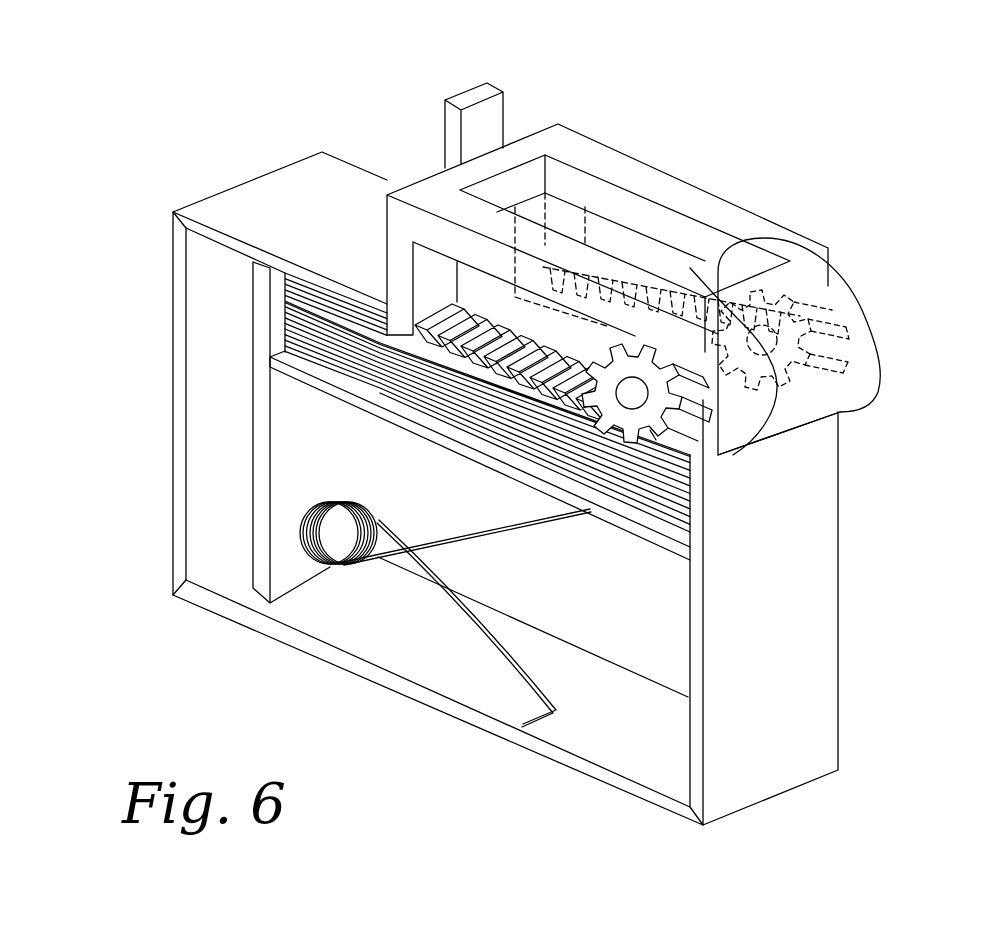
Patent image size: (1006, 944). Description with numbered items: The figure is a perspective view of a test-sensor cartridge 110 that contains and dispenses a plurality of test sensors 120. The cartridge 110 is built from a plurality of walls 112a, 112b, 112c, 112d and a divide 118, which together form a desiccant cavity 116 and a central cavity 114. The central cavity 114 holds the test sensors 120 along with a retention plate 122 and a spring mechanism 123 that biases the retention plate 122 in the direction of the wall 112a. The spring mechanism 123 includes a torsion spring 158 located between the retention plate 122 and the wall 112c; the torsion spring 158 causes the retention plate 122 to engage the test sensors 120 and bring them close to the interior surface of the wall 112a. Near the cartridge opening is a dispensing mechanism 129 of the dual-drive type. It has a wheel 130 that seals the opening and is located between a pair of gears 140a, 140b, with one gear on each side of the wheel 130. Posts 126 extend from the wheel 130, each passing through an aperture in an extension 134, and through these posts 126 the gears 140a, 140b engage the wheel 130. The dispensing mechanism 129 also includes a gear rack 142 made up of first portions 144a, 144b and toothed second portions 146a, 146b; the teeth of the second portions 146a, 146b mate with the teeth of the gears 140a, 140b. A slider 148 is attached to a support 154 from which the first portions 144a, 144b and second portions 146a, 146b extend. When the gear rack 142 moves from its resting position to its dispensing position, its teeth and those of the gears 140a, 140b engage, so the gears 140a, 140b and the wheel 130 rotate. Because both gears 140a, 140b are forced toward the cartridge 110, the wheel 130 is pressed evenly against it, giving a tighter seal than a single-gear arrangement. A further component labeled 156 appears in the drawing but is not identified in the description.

The test-sensor cartridge 110 is at (128, 133).
The wall 112a is at (338, 158).
The wall 112b is at (830, 636).
The wall 112c is at (174, 600).
The wall 112d is at (172, 307).
The central cavity 114 is at (424, 662).
The desiccant cavity 116 is at (200, 423).
The divide 118 is at (257, 592).
The test sensors 120 is at (293, 295).
The retention plate 122 is at (688, 453).
The spring mechanism 123 is at (382, 608).
The posts 126 is at (633, 400).
The dispensing mechanism 129 is at (888, 224).
The wheel 130 is at (867, 337).
The extension 134 is at (845, 410).
The gear 140a is at (667, 443).
The gear 140b is at (833, 315).
The gear rack 142 is at (524, 108).
The first portion 144a is at (625, 165).
The first portion 144b is at (467, 213).
The second portion 146a is at (610, 277).
The second portion 146b is at (415, 333).
The slider 148 is at (463, 100).
The support 154 is at (430, 187).
The gear shaft 156 is at (773, 265).
The torsion spring 158 is at (322, 567).